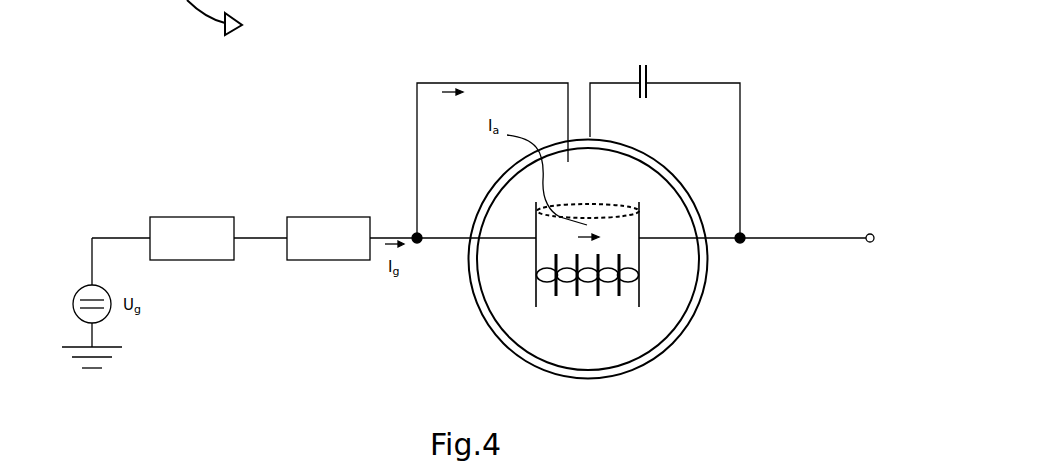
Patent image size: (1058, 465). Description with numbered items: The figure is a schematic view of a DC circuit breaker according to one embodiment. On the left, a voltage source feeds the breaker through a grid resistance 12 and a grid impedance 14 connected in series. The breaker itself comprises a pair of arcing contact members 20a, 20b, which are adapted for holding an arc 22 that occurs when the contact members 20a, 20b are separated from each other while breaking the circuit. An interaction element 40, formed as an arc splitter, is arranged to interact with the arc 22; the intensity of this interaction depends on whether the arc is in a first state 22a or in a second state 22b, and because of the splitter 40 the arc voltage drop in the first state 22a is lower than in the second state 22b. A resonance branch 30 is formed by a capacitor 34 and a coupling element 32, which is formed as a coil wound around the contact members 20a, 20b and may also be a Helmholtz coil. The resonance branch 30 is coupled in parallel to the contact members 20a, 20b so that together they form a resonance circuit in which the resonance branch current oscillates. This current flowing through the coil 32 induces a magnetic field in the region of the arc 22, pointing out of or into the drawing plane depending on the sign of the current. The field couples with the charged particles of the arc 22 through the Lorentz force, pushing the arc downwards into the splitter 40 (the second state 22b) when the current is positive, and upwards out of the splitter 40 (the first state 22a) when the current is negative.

The grid resistance 12 is at (180, 217).
The grid impedance 14 is at (303, 217).
The arcing contact member 20a is at (536, 252).
The arcing contact member 20b is at (640, 291).
The arc 22 is at (823, 115).
The arc in first state 22a is at (588, 213).
The arc in second state 22b is at (630, 273).
The resonance branch 30 is at (417, 147).
The coupling element 32 is at (497, 333).
The capacitor 34 is at (648, 72).
The interaction element 40 is at (600, 290).